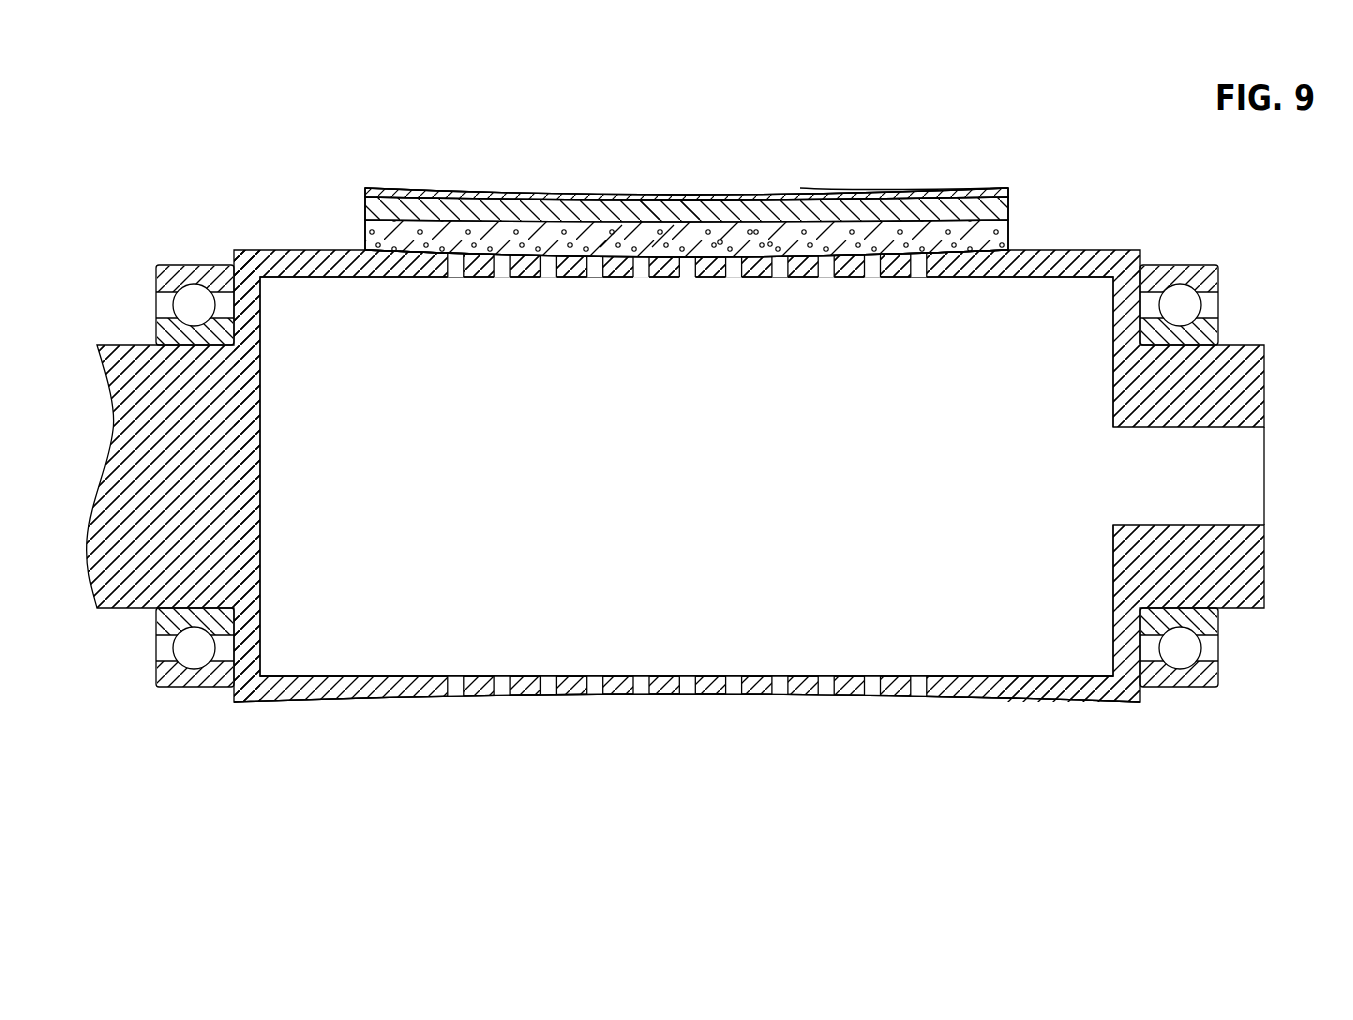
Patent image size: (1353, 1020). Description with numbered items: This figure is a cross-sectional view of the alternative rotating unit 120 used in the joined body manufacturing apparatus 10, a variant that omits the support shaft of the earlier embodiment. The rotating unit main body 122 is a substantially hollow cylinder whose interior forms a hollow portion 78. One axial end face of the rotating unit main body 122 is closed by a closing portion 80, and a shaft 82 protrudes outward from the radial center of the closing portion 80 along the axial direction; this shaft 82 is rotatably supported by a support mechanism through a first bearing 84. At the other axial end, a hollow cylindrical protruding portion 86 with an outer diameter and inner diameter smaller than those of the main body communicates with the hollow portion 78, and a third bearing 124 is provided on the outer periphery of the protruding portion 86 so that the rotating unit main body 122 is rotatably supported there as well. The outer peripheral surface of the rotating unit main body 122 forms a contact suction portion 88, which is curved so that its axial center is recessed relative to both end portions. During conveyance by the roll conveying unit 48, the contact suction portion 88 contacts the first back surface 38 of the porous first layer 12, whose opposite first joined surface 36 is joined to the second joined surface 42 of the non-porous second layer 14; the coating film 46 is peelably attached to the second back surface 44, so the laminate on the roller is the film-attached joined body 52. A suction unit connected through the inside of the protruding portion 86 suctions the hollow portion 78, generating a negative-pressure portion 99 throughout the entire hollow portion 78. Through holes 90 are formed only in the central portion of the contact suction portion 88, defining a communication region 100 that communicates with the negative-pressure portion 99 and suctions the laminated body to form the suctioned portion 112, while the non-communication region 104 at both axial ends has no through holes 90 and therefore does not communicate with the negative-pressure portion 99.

The joined body manufacturing apparatus 10 is at (197, 133).
The first layer 12 is at (738, 235).
The second layer 14 is at (705, 215).
The first joined surface 36 is at (624, 258).
The first back surface 38 is at (735, 245).
The second joined surface 42 is at (640, 238).
The second back surface 44 is at (605, 196).
The coating film 46 is at (657, 207).
The roll conveying unit 48 is at (315, 180).
The film-attached joined body 52 is at (964, 182).
The hollow portion 78 is at (342, 642).
The closing portion 80 is at (250, 652).
The shaft 82 is at (124, 358).
The first bearing 84 is at (196, 265).
The protruding portion 86 is at (1237, 378).
The contact suction portion 88 is at (524, 268).
The through holes 90 is at (690, 268).
The negative-pressure portion 99 is at (752, 640).
The communication region 100 is at (797, 197).
The non-communication region 104 is at (428, 248).
The suctioned portion 112 is at (863, 184).
The rotating unit 120 is at (423, 708).
The rotating unit main body 122 is at (1057, 688).
The third bearing 124 is at (1215, 284).